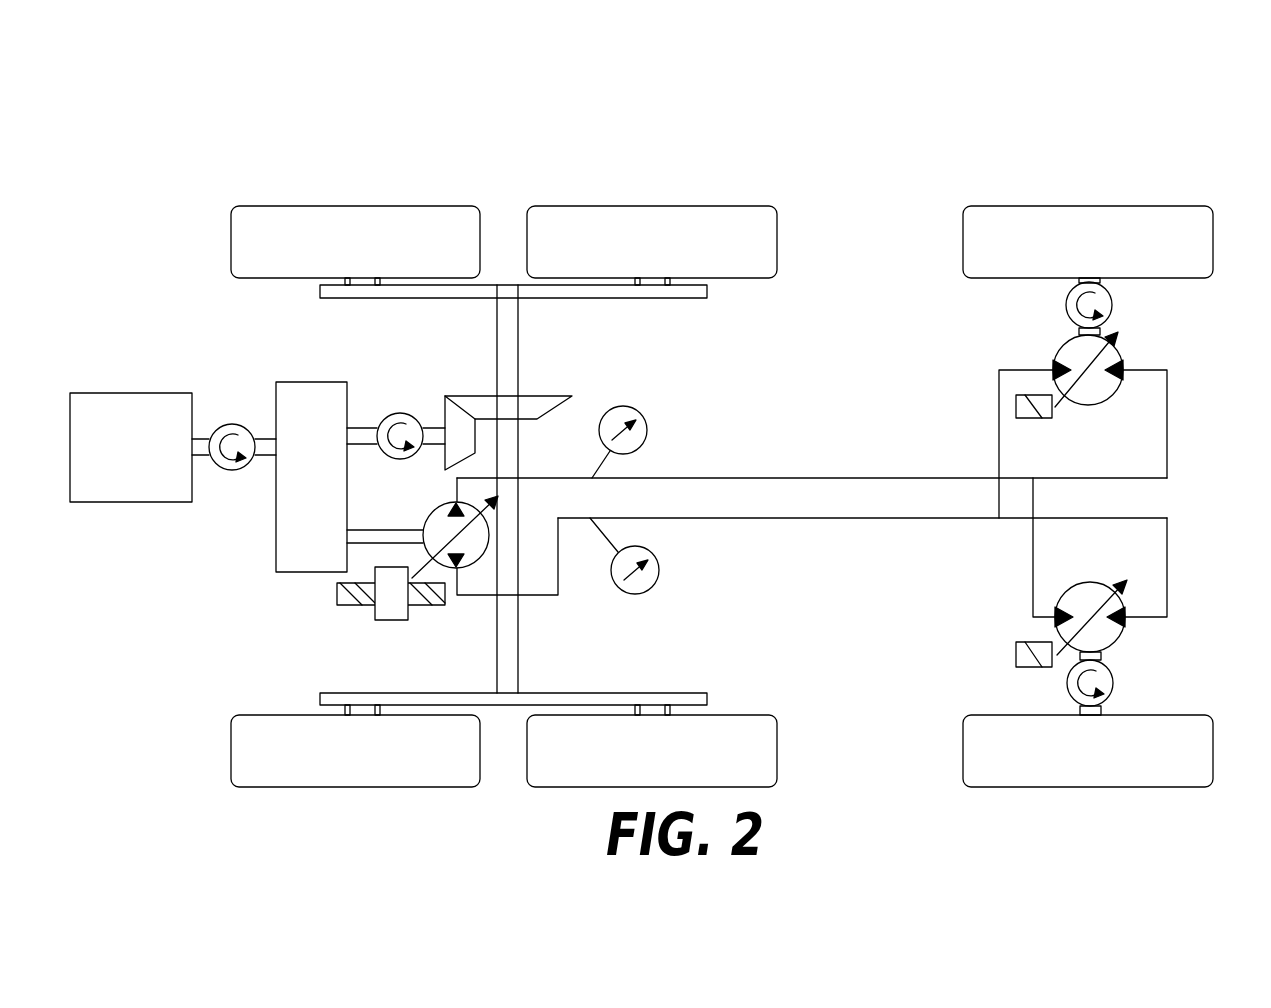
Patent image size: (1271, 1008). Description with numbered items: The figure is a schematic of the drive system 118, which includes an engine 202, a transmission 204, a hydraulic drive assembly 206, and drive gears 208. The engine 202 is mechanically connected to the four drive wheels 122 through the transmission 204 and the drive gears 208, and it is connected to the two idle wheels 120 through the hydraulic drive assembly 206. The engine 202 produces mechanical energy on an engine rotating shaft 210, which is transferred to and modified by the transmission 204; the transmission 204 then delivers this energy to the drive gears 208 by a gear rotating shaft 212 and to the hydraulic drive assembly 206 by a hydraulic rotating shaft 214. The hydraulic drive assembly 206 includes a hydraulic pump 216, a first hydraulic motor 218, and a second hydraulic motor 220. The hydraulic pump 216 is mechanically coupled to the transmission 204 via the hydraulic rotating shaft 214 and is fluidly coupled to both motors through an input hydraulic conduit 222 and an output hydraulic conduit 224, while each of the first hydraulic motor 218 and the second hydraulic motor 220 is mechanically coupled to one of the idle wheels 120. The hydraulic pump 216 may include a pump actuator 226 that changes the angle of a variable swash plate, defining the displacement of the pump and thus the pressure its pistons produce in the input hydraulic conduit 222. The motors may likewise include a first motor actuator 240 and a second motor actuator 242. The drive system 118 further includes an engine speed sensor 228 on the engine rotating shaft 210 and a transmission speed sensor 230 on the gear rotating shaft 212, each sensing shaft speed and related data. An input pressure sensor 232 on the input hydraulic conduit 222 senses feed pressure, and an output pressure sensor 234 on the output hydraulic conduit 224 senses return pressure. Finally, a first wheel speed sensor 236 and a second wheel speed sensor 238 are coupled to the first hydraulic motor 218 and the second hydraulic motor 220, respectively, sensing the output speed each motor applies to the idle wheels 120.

The drive system 118 is at (190, 192).
The idle wheels 120 is at (1015, 225).
The drive wheels 122 is at (457, 225).
The engine 202 is at (106, 410).
The transmission 204 is at (313, 400).
The hydraulic drive assembly 206 is at (432, 518).
The drive gears 208 is at (540, 396).
The engine rotating shaft 210 is at (266, 456).
The gear rotating shaft 212 is at (372, 427).
The hydraulic rotating shaft 214 is at (364, 588).
The hydraulic pump 216 is at (474, 572).
The first hydraulic motor 218 is at (1105, 632).
The second hydraulic motor 220 is at (1112, 365).
The input hydraulic conduit 222 is at (735, 519).
The output hydraulic conduit 224 is at (742, 477).
The pump actuator 226 is at (390, 612).
The engine speed sensor 228 is at (236, 440).
The transmission speed sensor 230 is at (406, 426).
The input pressure sensor 232 is at (649, 587).
The output pressure sensor 234 is at (632, 412).
The first wheel speed sensor 236 is at (1105, 680).
The second wheel speed sensor 238 is at (1100, 300).
The first motor actuator 240 is at (1017, 660).
The second motor actuator 242 is at (1025, 405).